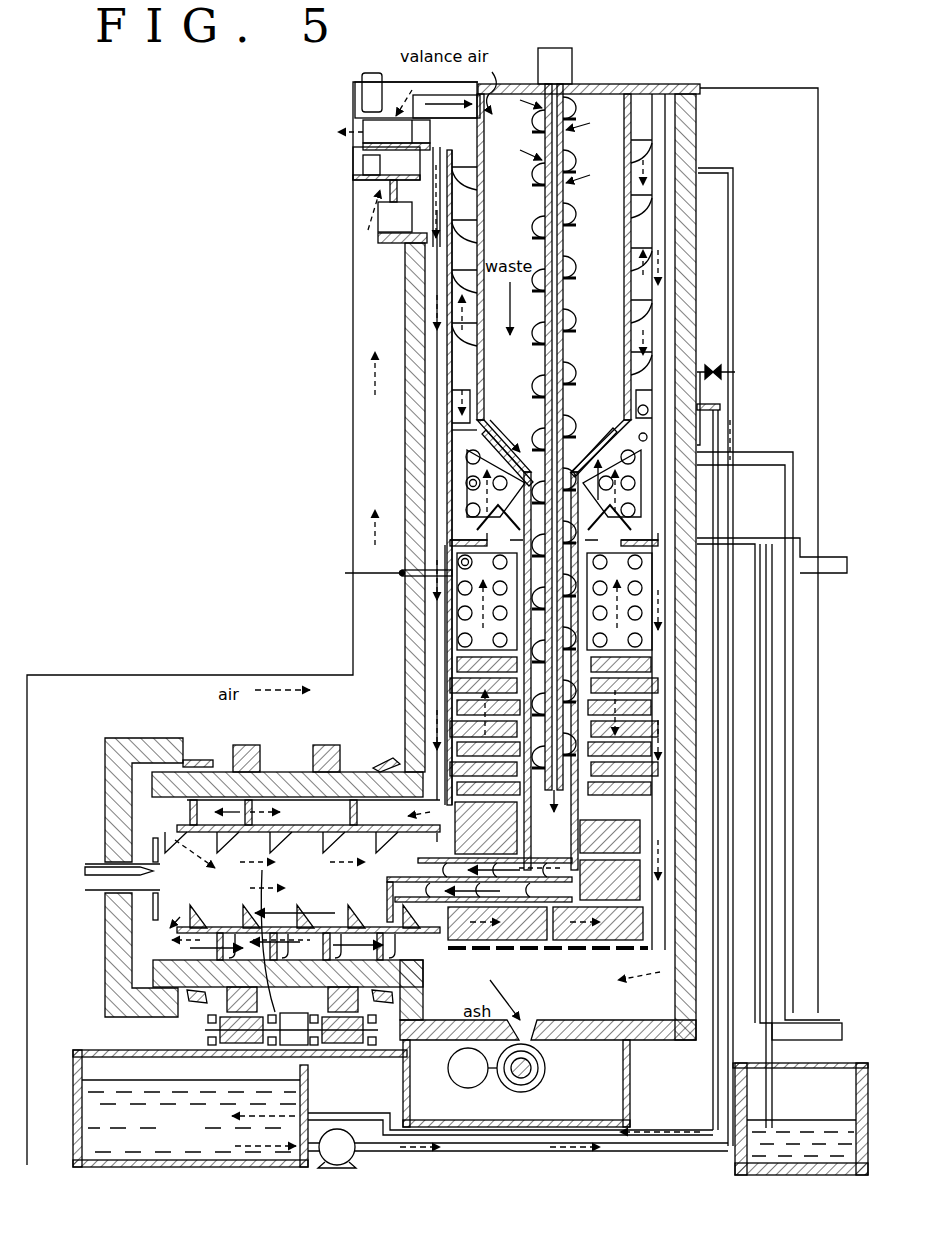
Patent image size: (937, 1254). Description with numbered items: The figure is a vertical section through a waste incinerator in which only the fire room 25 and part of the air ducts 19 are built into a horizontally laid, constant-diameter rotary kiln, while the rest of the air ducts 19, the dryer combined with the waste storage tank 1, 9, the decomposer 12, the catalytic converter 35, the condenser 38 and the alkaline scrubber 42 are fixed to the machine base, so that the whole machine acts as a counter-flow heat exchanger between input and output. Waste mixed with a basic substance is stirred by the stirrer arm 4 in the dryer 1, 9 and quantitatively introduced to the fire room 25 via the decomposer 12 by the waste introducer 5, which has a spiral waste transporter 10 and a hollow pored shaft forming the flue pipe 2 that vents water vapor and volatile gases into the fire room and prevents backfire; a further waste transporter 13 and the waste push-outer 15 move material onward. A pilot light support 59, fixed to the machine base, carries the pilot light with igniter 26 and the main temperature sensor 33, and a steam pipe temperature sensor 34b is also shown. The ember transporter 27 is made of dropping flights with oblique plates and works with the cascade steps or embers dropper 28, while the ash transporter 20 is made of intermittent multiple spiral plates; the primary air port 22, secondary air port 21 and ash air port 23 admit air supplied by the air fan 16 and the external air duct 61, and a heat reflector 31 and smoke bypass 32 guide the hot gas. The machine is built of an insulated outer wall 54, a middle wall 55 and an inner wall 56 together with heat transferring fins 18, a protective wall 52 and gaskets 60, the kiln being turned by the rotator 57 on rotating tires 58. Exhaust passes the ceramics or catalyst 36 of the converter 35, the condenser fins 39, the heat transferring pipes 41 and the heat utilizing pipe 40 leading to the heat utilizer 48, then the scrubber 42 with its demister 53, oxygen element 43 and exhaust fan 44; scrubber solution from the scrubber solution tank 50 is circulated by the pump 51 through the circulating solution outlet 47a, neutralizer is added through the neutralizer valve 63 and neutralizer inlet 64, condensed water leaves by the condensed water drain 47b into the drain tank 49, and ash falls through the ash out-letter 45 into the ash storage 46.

The waste storage tank 1 is at (549, 452).
The flue pipe 2 is at (553, 239).
The stirrer/collecting arm 4 is at (594, 442).
The waste introducer 5 is at (541, 478).
The dryer 9 is at (554, 482).
The waste transporter 10 is at (538, 392).
The decomposer 12 is at (554, 609).
The waste transporter 13 is at (566, 378).
The waste push-outer 15 is at (387, 883).
The air fan 16 is at (372, 165).
The heat transferring fin 18 is at (443, 292).
The air duct 19 is at (437, 322).
The ash transporter 20 is at (350, 815).
The secondary air port 21 is at (440, 935).
The primary air port 22 is at (175, 835).
The ash air port 23 is at (166, 937).
The fire room 25 is at (286, 911).
The pilot light with igniter 26 is at (191, 892).
The ember transporter 27 is at (284, 892).
The cascade steps/embers dropper 28 is at (305, 917).
The heat reflector 31 is at (153, 845).
The smoke bypass 32 is at (335, 849).
The main temperature sensor 33 is at (85, 880).
The steam pipe temperature sensor 34b is at (372, 579).
The catalytic converter 35 is at (553, 802).
The ceramics/catalyst 36 is at (463, 707).
The condenser 38 is at (457, 430).
The condenser fin 39 is at (455, 458).
The heat utilizing pipe 40 is at (472, 484).
The heat transferring pipe 41 is at (463, 598).
The alkaline scrubber 42 is at (642, 220).
The O2 43 is at (372, 80).
The exhaust fan 44 is at (372, 133).
The ash out-letter 45 is at (516, 1083).
The ash storage 46 is at (524, 1074).
The circulating solution outlet 47a is at (720, 408).
The condensed water drain 47b is at (768, 538).
The heat utilizing means 48 is at (769, 713).
The drain tank 49 is at (800, 1119).
The scrubber solution tank 50 is at (240, 1108).
The pump 51 is at (518, 1127).
The protective wall 52 is at (818, 138).
The demister 53 is at (446, 122).
The outer wall 54 is at (420, 357).
The middle wall 55 is at (445, 660).
The inner wall 56 is at (525, 730).
The rotator 57 is at (288, 957).
The rotating tire 58 is at (325, 758).
The pilot light support 59 is at (125, 753).
The gasket 60 is at (200, 765).
The external air duct 61 is at (140, 687).
The neutralizer valve 63 is at (722, 372).
The neutralizer inlet 64 is at (643, 437).